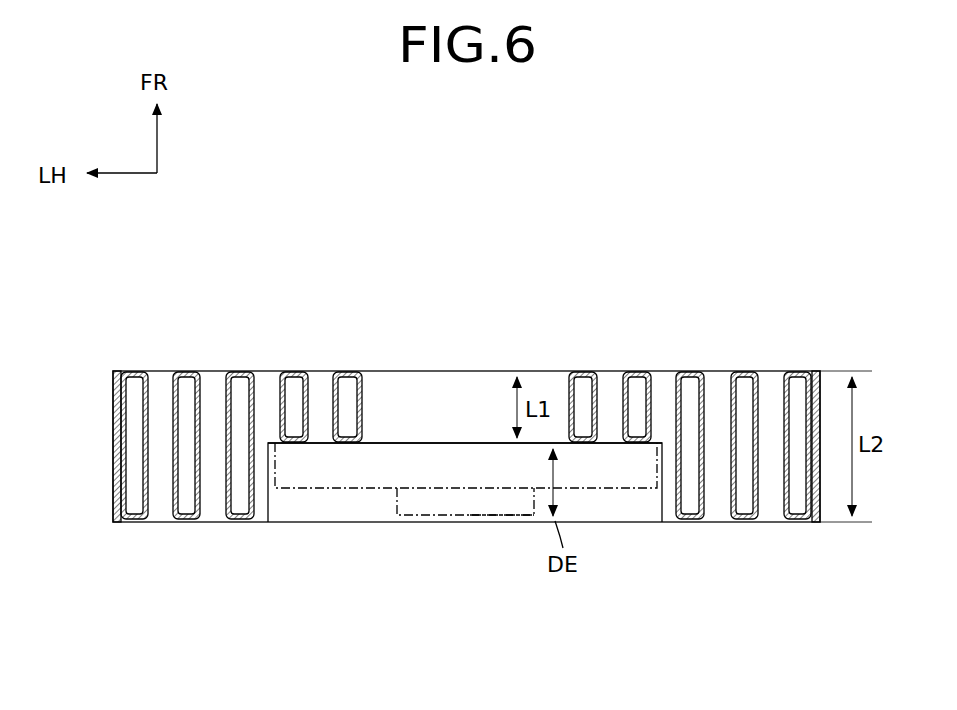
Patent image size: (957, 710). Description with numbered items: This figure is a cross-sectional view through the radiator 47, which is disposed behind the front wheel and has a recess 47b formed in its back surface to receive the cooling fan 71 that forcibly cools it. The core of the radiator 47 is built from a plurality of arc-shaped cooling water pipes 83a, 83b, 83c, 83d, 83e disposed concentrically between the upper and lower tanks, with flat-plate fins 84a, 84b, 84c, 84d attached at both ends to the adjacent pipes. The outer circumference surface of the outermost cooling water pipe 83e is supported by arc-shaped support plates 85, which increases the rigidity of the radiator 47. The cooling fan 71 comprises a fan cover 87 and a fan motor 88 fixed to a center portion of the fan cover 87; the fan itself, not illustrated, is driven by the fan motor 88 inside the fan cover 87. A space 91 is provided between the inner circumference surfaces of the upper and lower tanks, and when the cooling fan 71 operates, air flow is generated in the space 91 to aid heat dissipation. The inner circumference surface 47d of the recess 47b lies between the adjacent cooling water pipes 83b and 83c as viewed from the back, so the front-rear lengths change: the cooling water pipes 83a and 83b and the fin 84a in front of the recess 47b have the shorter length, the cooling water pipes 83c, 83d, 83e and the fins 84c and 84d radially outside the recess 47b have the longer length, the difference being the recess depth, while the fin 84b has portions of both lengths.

The radiator 47 is at (283, 265).
The recess 47b is at (380, 450).
The inner circumference surface 47d is at (660, 496).
The cooling fan 71 is at (506, 521).
The cooling water pipe 83a is at (347, 390).
The cooling water pipe 83b is at (296, 390).
The cooling water pipe 83c is at (247, 521).
The cooling water pipe 83d is at (188, 521).
The cooling water pipe 83e is at (133, 521).
The fin 84a is at (323, 388).
The fin 84b is at (268, 388).
The fin 84c is at (214, 388).
The fin 84d is at (160, 388).
The support plate 85 is at (113, 410).
The fan cover 87 is at (325, 490).
The fan motor 88 is at (447, 517).
The space 91 is at (434, 362).